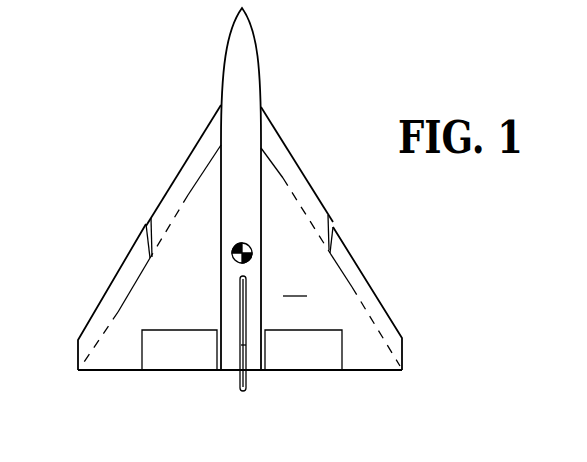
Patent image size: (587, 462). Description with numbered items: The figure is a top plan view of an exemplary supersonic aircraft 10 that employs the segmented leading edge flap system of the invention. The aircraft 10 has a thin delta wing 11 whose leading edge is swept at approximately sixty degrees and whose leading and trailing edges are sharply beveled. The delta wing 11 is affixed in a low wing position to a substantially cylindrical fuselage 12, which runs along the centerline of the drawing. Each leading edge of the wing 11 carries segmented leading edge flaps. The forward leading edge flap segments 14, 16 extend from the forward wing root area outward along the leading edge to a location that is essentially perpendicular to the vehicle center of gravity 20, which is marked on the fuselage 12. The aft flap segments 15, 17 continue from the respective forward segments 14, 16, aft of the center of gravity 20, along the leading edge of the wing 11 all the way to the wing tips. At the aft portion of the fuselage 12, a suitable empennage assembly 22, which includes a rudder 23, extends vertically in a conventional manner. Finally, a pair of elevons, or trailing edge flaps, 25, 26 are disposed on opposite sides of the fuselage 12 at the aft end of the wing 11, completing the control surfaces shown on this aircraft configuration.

The supersonic aircraft 10 is at (103, 141).
The delta wing 11 is at (299, 284).
The fuselage 12 is at (258, 67).
The forward leading edge flap segment 14 is at (305, 178).
The leading edge flap segment 15 is at (371, 287).
The forward leading edge flap segment 16 is at (186, 161).
The leading edge flap segment 17 is at (109, 288).
The vehicle center of gravity 20 is at (242, 243).
The empennage assembly 22 is at (239, 345).
The rudder 23 is at (247, 375).
The elevon 25 is at (320, 363).
The elevon 26 is at (157, 372).